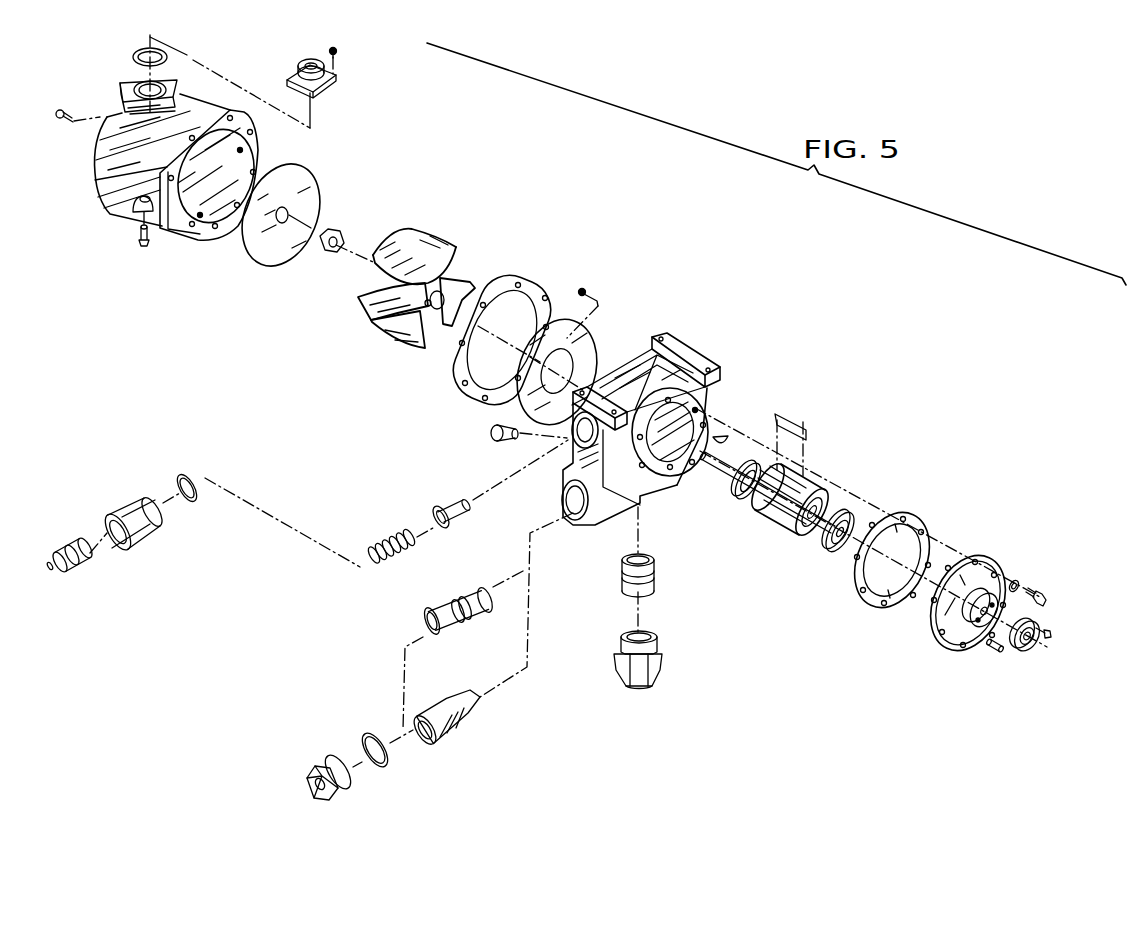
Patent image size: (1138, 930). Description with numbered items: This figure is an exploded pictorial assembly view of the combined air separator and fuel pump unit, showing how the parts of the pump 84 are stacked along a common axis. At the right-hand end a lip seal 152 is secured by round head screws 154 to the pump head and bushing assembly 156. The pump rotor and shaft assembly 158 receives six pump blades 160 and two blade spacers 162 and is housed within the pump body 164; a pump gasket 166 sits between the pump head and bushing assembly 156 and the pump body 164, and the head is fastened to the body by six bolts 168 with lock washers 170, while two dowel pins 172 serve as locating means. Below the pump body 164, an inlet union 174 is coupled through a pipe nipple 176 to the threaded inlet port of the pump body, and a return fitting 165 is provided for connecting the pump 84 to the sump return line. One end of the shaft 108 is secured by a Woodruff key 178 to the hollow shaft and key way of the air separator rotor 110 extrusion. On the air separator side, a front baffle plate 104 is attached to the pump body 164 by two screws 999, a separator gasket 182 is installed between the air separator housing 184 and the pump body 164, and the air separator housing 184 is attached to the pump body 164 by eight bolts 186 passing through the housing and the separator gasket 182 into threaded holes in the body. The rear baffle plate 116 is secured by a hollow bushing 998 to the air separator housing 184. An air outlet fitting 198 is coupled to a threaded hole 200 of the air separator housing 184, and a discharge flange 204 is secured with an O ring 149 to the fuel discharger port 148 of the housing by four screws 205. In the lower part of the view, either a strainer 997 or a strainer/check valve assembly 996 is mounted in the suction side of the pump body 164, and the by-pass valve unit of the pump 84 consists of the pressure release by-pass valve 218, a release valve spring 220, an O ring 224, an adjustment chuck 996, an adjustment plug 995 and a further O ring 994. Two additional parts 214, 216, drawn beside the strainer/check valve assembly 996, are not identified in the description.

The O ring 149 is at (128, 60).
The fuel discharger port 148 is at (170, 84).
The air separator housing 184 is at (267, 158).
The bolts 186 is at (60, 121).
The threaded hole 200 is at (134, 207).
The air outlet fitting 198 is at (149, 245).
The screws 205 is at (340, 52).
The discharge flange 204 is at (336, 80).
The rear baffle plate 116 is at (307, 168).
The hollow bushing 998 is at (339, 230).
The air separator rotor 110 is at (427, 243).
The separator gasket 182 is at (540, 290).
The screws 999 is at (587, 290).
The front baffle plate 104 is at (590, 330).
The pump body 164 is at (680, 350).
The pump 84 is at (707, 355).
The Woodruff key 178 is at (727, 432).
The pump blades 160 is at (798, 417).
The pump rotor and shaft assembly 158 is at (817, 483).
The blade spacers 162 is at (737, 487).
The shaft 108 is at (713, 468).
The pump gasket 166 is at (913, 513).
The pump head and bushing assembly 156 is at (983, 557).
The lock washers 170 is at (1017, 582).
The bolts 168 is at (1040, 592).
The round head screws 154 is at (1055, 632).
The dowel pins 172 is at (988, 650).
The lip seal 152 is at (1020, 647).
The pipe nipple 176 is at (658, 580).
The inlet union 174 is at (660, 668).
The return fitting 165 is at (490, 432).
The pressure release by-pass valve 218 is at (435, 510).
The release valve spring 220 is at (372, 550).
The strainer 997 is at (427, 620).
The adjustment chuck 996 is at (140, 497).
The O ring 224 is at (190, 475).
The adjustment plug 995 is at (72, 537).
The O ring 994 is at (90, 547).
The washer 214 is at (390, 765).
The plug 216 is at (348, 793).